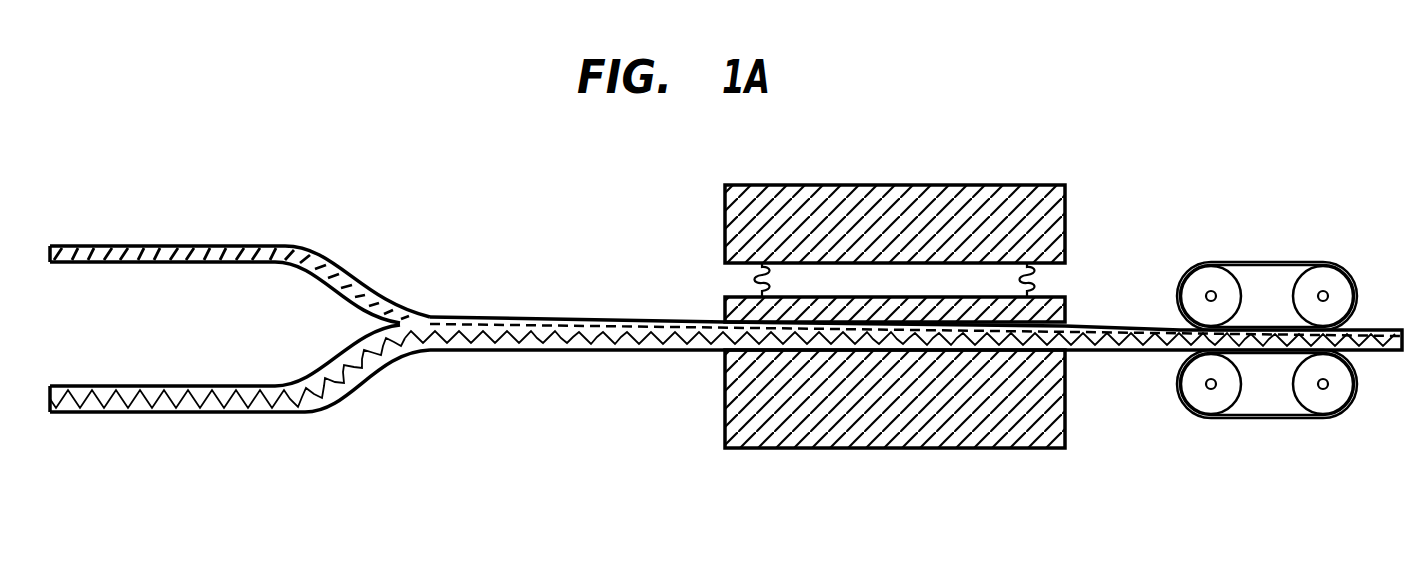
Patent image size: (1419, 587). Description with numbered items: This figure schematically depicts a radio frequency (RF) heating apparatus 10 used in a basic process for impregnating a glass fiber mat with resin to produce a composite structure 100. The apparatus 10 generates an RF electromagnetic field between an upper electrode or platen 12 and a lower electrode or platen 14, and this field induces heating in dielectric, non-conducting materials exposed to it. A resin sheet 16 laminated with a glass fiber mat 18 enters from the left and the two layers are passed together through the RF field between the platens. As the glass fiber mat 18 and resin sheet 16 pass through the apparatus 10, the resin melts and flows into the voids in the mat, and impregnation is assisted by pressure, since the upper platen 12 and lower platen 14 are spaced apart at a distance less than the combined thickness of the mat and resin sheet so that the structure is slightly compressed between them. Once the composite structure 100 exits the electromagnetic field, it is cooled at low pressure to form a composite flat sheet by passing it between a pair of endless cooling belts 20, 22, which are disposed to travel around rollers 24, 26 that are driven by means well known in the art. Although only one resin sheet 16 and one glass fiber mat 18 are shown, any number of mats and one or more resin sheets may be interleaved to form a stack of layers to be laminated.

The radio frequency heating apparatus 10 is at (850, 261).
The upper electrode or platen 12 is at (725, 190).
The lower electrode or platen 14 is at (725, 387).
The resin sheet 16 is at (193, 246).
The glass fiber mat 18 is at (200, 412).
The endless cooling belt 20 is at (1287, 260).
The endless cooling belt 22 is at (1267, 417).
The rollers 24 is at (1208, 277).
The rollers 26 is at (1198, 395).
The composite structure 100 is at (1105, 330).